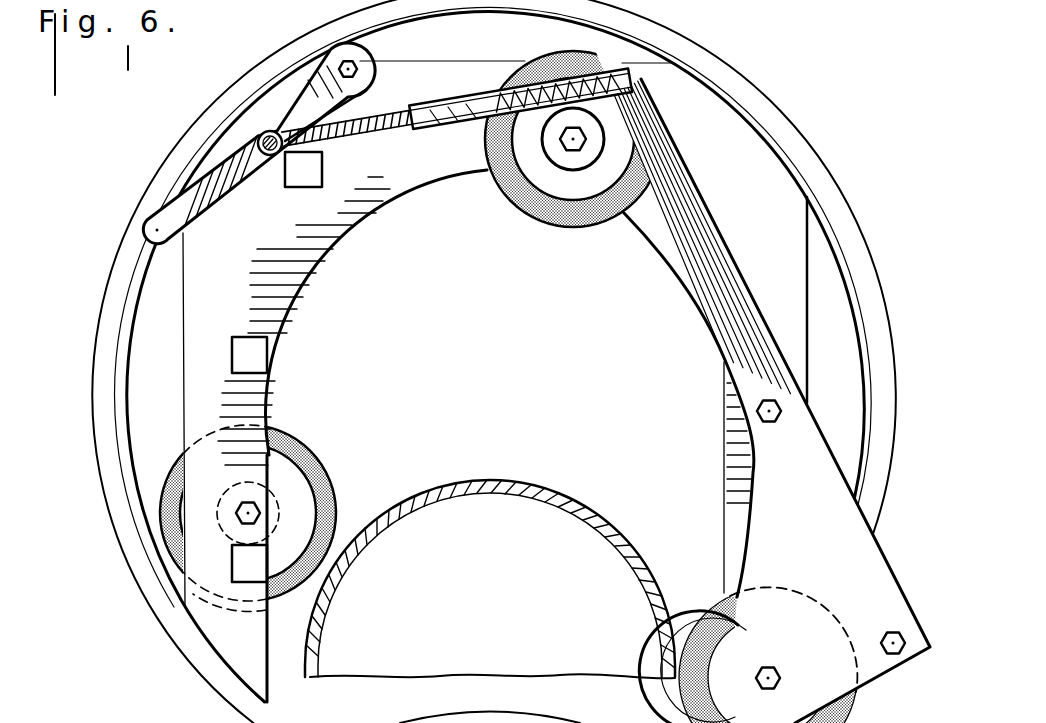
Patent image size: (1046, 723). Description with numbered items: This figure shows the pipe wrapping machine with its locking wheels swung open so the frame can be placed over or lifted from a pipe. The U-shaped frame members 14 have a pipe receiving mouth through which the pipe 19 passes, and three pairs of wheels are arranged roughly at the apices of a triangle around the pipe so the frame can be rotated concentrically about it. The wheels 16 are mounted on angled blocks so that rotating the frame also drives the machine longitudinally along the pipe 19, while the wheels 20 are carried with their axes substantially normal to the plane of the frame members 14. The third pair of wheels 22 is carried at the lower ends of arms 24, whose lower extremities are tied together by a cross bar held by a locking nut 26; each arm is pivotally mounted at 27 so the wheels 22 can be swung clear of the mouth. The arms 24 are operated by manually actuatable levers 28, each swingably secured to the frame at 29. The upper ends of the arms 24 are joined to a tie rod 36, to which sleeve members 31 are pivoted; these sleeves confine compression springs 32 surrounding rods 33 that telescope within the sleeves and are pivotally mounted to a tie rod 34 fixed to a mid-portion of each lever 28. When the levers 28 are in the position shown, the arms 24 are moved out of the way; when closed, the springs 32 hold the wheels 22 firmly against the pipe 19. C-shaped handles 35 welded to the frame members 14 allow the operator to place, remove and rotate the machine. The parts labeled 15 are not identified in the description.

The frame members 14 is at (722, 490).
The lining pads 15 is at (303, 187).
The wheels 16 is at (333, 491).
The pipe 19 is at (580, 510).
The wheels 20 is at (560, 190).
The wheels 22 is at (851, 707).
The arms 24 is at (886, 559).
The locking nut 26 is at (900, 660).
The pivotal mounting 27 is at (782, 412).
The levers 28 is at (221, 198).
The swingable mounting 29 is at (376, 52).
The sleeve members 31 is at (456, 96).
The compression springs 32 is at (397, 130).
The rods 33 is at (300, 130).
The tie rod 34 is at (258, 136).
The C-shaped handles 35 is at (735, 87).
The tie rod 36 is at (642, 90).